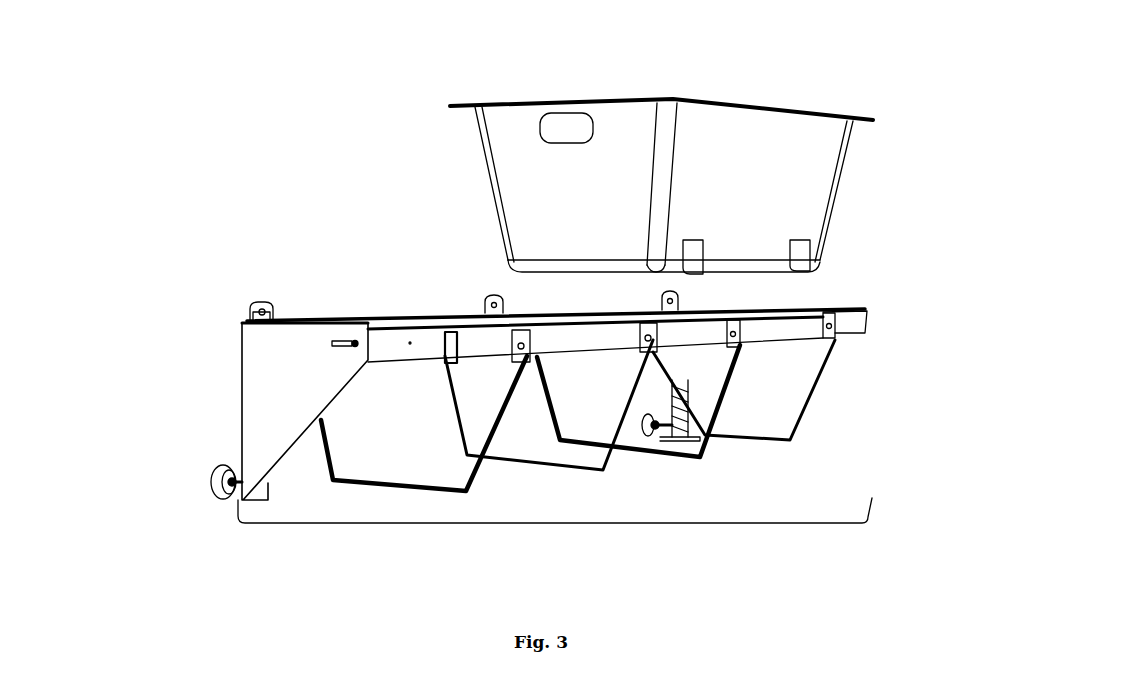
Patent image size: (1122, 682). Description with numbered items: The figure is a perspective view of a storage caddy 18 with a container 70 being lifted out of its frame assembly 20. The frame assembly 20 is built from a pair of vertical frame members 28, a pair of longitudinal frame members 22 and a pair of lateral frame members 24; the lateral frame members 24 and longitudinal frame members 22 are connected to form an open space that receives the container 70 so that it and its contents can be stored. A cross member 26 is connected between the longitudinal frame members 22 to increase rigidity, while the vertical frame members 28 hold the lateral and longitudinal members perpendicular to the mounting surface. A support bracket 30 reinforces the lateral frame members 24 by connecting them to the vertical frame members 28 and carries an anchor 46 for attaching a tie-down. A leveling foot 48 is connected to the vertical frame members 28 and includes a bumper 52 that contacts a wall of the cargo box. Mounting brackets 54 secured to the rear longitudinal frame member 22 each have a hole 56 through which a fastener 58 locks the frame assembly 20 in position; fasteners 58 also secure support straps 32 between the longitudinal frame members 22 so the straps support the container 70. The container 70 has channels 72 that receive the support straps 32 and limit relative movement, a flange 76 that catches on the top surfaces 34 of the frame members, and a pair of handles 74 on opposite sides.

The storage caddy 18 is at (329, 232).
The frame assembly 20 is at (555, 535).
The longitudinal frame members 22 is at (458, 328).
The lateral frame members 24 is at (712, 312).
The cross member 26 is at (473, 345).
The vertical frame members 28 is at (683, 393).
The support bracket 30 is at (263, 398).
The support straps 32 is at (822, 357).
The top surfaces 34 is at (793, 303).
The anchor 46 is at (335, 342).
The leveling foot 48 is at (197, 508).
The bumper 52 is at (213, 473).
The mounting brackets 54 is at (241, 278).
The hole 56 is at (250, 307).
The fastener 58 is at (833, 313).
The container 70 is at (697, 140).
The channels 72 is at (800, 270).
The handles 74 is at (572, 127).
The flange 76 is at (872, 103).